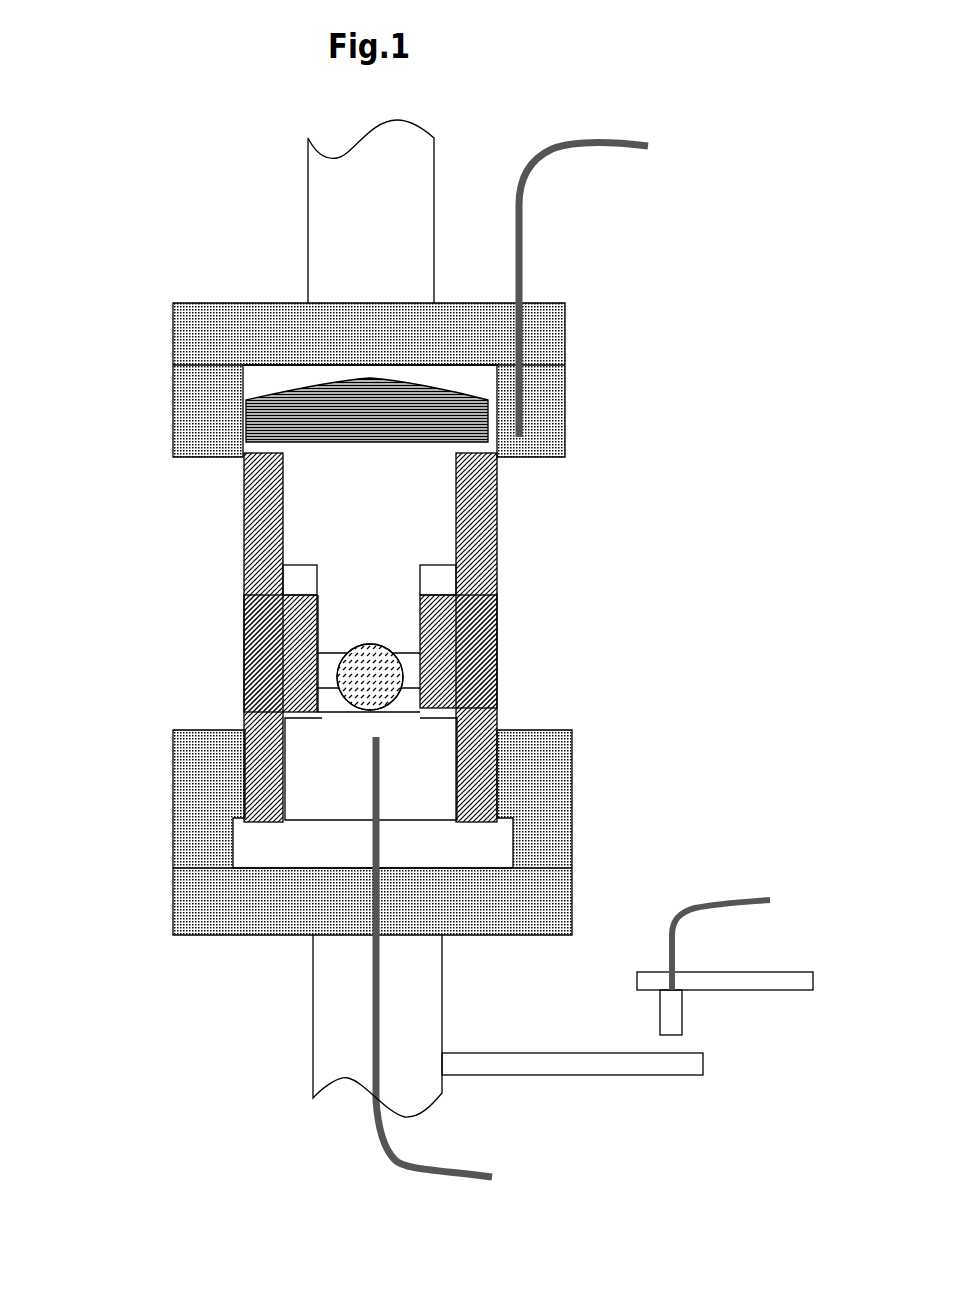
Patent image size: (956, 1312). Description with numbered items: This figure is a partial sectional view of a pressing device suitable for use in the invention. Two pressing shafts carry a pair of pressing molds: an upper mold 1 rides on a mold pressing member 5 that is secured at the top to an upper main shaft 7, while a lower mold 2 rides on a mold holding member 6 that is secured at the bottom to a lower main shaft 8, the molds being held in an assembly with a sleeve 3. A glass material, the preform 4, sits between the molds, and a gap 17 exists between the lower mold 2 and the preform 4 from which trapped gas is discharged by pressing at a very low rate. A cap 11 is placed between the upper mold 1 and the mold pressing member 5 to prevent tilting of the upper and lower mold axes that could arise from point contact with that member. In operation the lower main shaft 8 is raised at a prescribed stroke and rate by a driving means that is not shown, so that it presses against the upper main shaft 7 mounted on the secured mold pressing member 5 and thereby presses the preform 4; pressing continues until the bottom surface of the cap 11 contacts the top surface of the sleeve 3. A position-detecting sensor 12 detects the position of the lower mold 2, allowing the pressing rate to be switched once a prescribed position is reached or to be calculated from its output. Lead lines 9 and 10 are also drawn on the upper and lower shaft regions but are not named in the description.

The upper mold 1 is at (323, 502).
The lower mold 2 is at (323, 785).
The sleeve 3 is at (262, 602).
The preform 4 is at (335, 676).
The mold pressing member 5 is at (173, 335).
The mold holding member 6 is at (185, 862).
The upper main shaft 7 is at (337, 233).
The lower main shaft 8 is at (342, 1002).
The upper lead wire 9 is at (523, 412).
The lower lead wire 10 is at (378, 802).
The cap 11 is at (245, 412).
The position-detecting sensor 12 is at (677, 1020).
The gap 17 is at (497, 667).